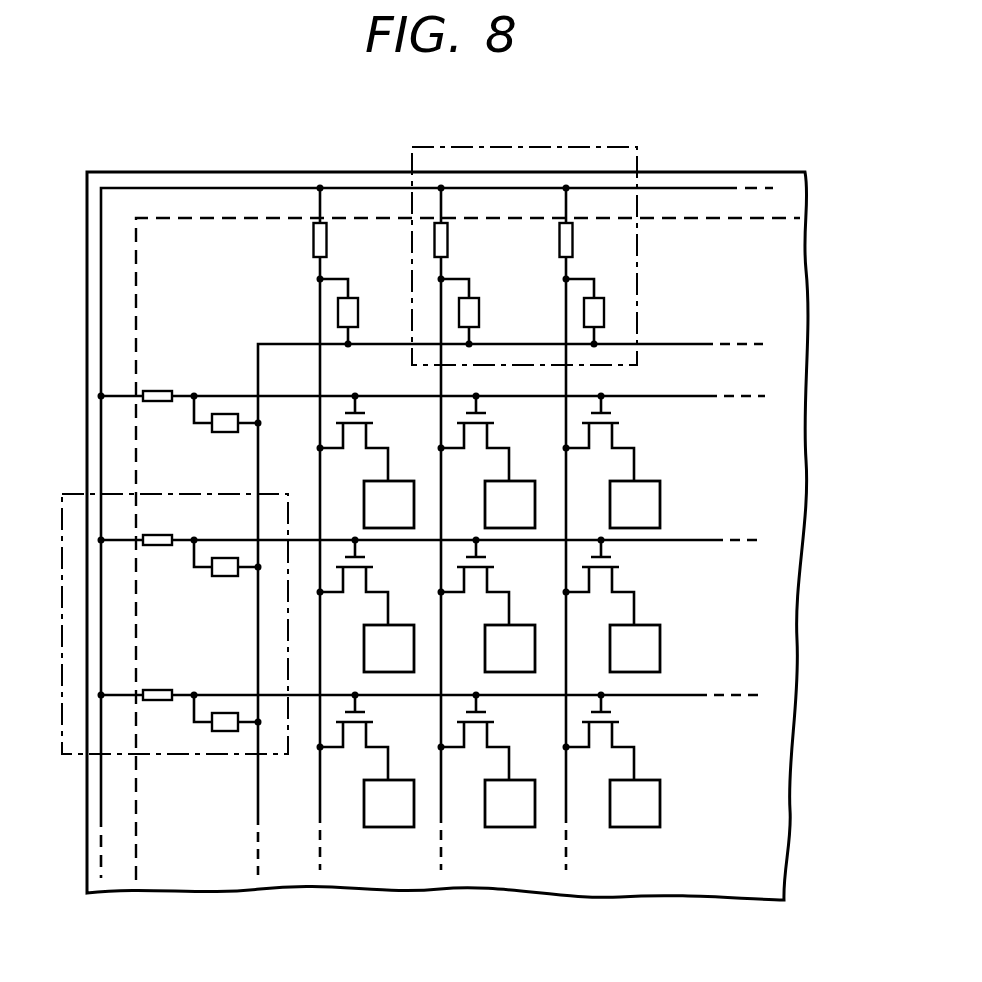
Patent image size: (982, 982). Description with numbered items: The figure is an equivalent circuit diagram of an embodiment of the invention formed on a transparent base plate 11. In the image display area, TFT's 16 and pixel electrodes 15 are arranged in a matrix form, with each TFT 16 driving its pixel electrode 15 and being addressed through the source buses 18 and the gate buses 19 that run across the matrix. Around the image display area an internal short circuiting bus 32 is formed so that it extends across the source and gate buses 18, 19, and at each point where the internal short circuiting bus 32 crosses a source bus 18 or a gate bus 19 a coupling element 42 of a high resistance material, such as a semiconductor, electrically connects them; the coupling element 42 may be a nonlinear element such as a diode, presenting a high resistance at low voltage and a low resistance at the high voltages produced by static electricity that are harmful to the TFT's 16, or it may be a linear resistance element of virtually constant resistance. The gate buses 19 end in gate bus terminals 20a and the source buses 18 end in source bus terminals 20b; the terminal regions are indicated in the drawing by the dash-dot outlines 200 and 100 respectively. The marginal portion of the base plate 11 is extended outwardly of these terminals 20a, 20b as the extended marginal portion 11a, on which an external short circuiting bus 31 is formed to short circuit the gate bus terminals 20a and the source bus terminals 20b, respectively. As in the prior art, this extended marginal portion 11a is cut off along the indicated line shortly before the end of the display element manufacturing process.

The transparent base plate 11 is at (87, 340).
The extended marginal portion 11a is at (118, 248).
The pixel electrode 15 is at (364, 497).
The TFT 16 is at (372, 418).
The source bus 18 is at (670, 397).
The gate bus 19 is at (315, 802).
The gate bus terminal 20a is at (163, 390).
The source bus terminal 20b is at (313, 247).
The external short circuiting bus 31 is at (230, 187).
The internal short circuiting bus 32 is at (687, 343).
The coupling element 42 is at (360, 318).
The signal line terminal region 100 is at (585, 147).
The scanning line terminal region 200 is at (61, 757).